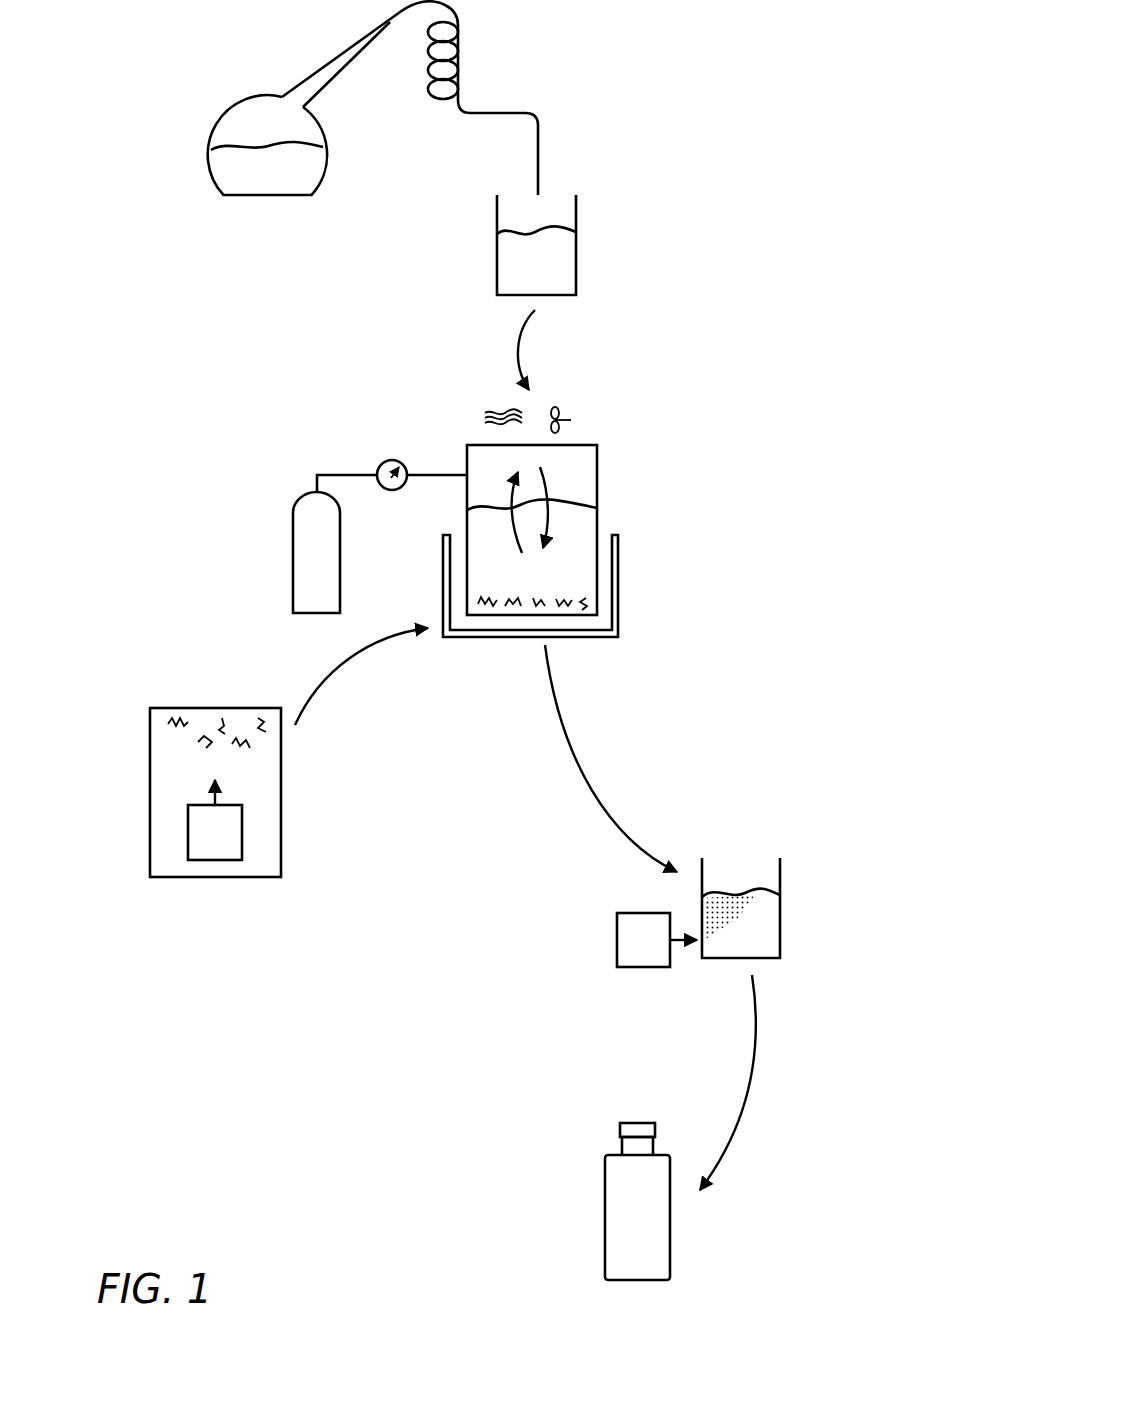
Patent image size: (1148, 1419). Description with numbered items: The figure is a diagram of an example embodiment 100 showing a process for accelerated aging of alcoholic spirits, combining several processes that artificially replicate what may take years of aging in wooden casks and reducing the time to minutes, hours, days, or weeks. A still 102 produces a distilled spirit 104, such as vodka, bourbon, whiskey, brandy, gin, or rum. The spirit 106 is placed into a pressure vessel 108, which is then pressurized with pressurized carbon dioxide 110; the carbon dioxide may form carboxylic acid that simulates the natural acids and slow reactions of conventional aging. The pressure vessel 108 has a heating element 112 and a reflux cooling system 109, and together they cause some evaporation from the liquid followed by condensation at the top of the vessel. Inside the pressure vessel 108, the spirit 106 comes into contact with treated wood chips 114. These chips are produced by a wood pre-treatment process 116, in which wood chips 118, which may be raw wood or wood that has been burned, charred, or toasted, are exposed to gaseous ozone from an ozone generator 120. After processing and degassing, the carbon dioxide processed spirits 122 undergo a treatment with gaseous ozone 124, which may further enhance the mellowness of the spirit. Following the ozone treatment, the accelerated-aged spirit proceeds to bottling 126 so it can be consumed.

The embodiment 100 is at (162, 1112).
The still 102 is at (225, 175).
The distilled spirit 104 is at (567, 243).
The spirit 106 is at (588, 519).
The pressure vessel 108 is at (597, 453).
The reflux cooling system 109 is at (583, 415).
The pressurized carbon dioxide 110 is at (293, 547).
The heating element 112 is at (620, 613).
The treated wood chips 114 is at (582, 595).
The wood pre-treatment process 116 is at (281, 845).
The wood chips 118 is at (163, 720).
The ozone generator 120 is at (188, 832).
The carbon dioxide processed spirits 122 is at (780, 900).
The gaseous ozone 124 is at (617, 945).
The bottling 126 is at (605, 1240).